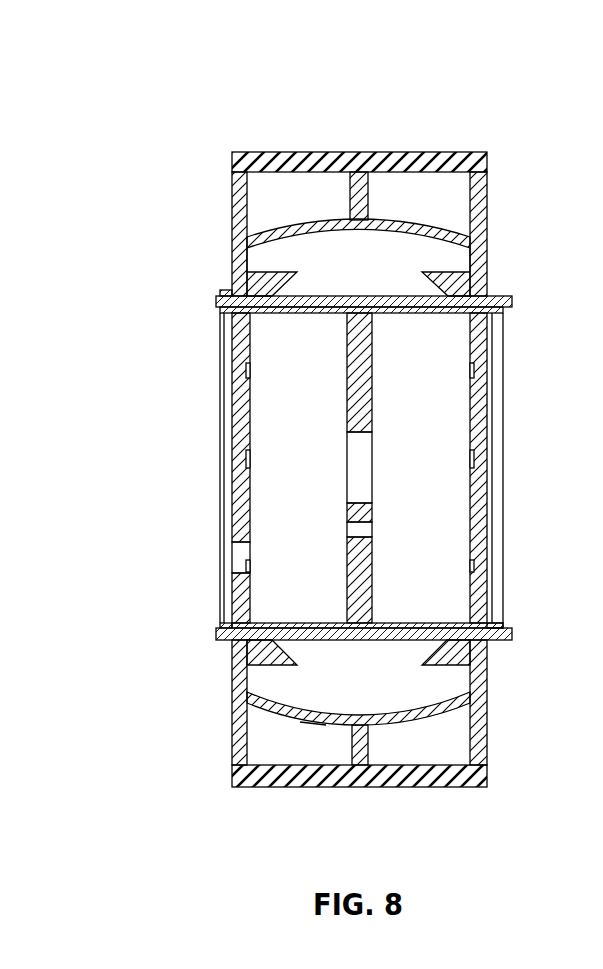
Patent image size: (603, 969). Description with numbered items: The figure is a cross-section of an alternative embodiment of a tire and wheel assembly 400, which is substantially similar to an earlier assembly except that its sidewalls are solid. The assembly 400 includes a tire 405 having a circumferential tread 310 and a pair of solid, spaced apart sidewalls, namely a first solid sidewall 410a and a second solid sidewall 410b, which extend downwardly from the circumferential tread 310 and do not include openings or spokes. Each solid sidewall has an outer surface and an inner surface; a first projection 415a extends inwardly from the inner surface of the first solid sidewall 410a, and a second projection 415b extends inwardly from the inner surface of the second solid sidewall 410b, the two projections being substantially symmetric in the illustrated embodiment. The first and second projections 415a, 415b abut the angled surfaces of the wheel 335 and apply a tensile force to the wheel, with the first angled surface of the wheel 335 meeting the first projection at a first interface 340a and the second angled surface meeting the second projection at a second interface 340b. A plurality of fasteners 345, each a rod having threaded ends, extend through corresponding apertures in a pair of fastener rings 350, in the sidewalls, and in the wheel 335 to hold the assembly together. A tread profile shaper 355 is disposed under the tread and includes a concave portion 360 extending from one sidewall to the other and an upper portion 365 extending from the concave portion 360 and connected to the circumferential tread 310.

The tire and wheel assembly 400 is at (177, 73).
The circumferential tread 310 is at (470, 150).
The first interface 340a is at (250, 297).
The second interface 340b is at (447, 293).
The second solid sidewall 410b is at (480, 200).
The tire 405 is at (223, 293).
The first projection 415a is at (248, 297).
The second projection 415b is at (472, 286).
The fastener rings 350 is at (503, 405).
The wheel 335 is at (360, 512).
The fasteners 345 is at (505, 628).
The first solid sidewall 410a is at (242, 705).
The concave portion 360 is at (438, 712).
The tread profile shaper 355 is at (313, 722).
The upper portion 365 is at (357, 755).